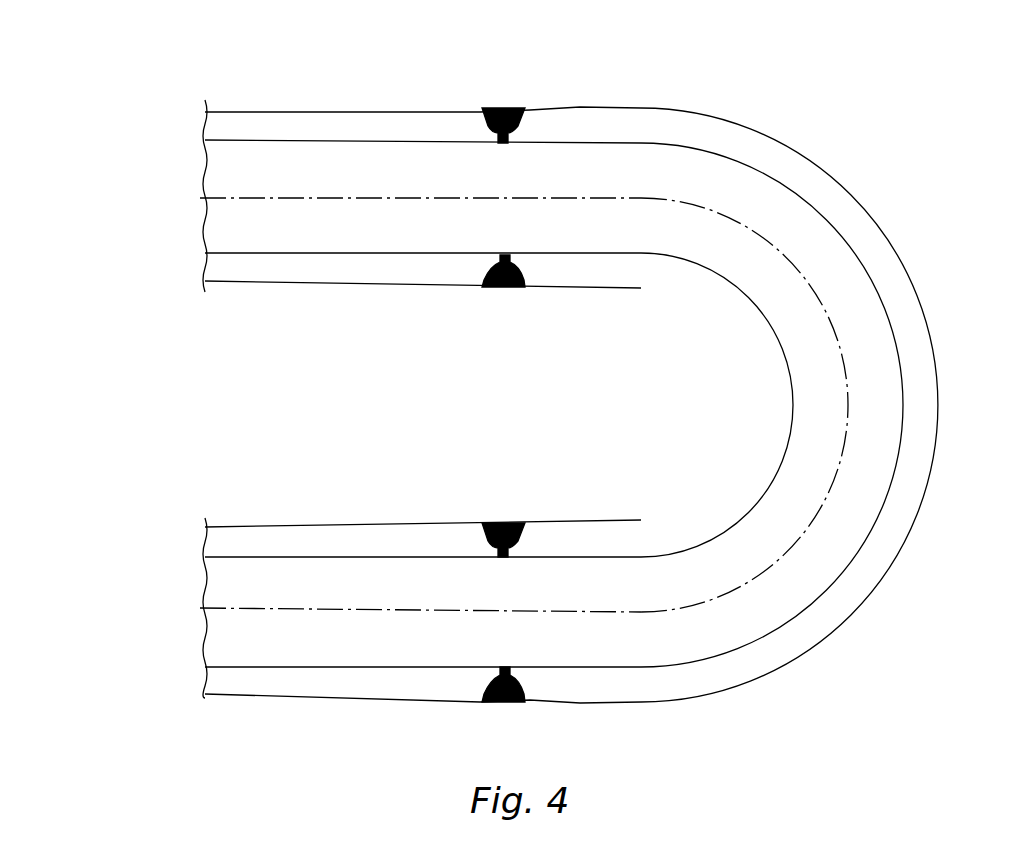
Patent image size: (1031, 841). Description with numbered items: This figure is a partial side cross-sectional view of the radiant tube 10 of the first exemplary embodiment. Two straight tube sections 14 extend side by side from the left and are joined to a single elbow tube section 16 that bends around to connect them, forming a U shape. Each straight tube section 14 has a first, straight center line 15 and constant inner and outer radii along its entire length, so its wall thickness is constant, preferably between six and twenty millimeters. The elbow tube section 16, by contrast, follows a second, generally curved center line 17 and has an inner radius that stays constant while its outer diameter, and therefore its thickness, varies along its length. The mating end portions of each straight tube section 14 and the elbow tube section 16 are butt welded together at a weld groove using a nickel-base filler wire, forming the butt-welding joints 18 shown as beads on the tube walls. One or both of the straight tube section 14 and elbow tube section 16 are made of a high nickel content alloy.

The radiant tube 10 is at (583, 405).
The straight tube section 14 is at (296, 112).
The first center line 15 is at (225, 198).
The elbow tube section 16 is at (940, 376).
The second center line 17 is at (848, 441).
The butt-welding joint 18 is at (511, 108).